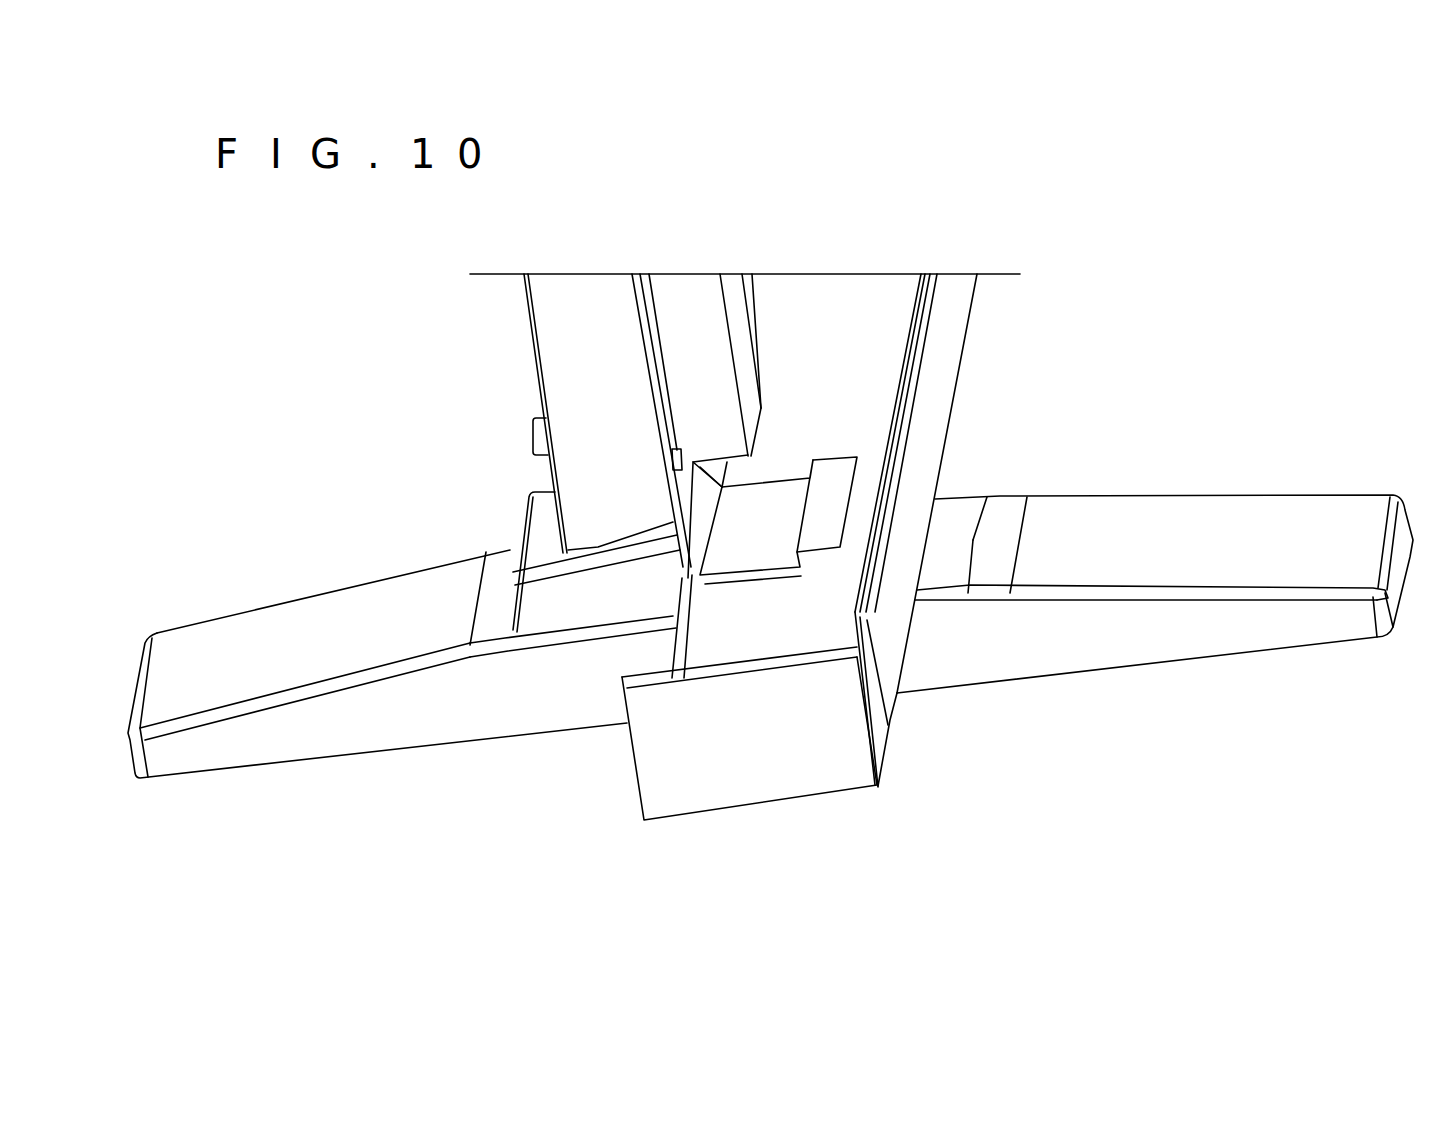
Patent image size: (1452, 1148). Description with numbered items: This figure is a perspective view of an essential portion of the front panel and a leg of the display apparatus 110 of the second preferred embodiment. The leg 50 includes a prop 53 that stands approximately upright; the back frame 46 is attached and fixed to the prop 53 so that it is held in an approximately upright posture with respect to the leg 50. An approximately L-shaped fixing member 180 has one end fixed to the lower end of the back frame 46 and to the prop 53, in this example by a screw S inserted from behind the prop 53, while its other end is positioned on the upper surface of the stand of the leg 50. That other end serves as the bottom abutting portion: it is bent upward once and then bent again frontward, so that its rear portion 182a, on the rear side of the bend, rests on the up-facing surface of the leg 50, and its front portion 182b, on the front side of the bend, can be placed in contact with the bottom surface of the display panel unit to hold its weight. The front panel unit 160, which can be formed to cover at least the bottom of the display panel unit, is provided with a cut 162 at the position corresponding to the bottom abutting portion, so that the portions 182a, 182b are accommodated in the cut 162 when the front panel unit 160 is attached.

The back frame 46 is at (737, 340).
The leg 50 is at (1243, 520).
The prop 53 is at (552, 368).
The screw S is at (543, 443).
The display apparatus 110 is at (963, 777).
The front panel unit 160 is at (952, 366).
The cut 162 is at (700, 590).
The fixing member 180 is at (753, 533).
The rear portion 182a is at (778, 492).
The front portion 182b is at (842, 482).